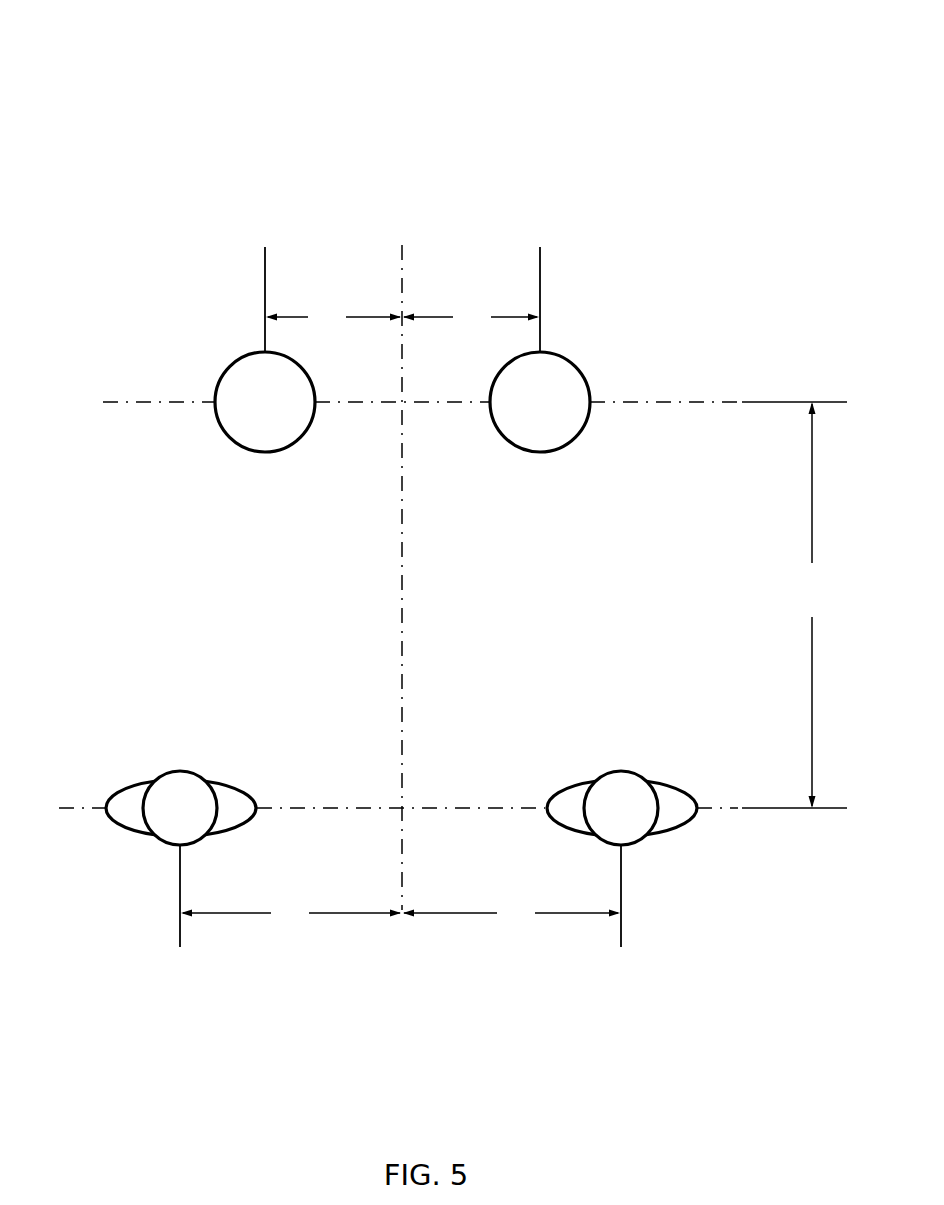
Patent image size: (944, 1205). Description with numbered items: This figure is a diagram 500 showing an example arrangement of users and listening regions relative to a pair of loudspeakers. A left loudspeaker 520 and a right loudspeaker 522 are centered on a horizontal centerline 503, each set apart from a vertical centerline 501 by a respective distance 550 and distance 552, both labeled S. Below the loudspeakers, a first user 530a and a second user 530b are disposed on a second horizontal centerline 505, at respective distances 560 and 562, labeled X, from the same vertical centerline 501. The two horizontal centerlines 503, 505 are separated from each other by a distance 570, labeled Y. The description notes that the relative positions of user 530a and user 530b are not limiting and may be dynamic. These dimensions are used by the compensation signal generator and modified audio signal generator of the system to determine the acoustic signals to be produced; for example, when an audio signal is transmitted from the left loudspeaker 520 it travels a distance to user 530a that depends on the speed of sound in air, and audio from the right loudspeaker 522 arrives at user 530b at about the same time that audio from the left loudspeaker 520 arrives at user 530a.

The diagram 500 is at (86, 41).
The centerline 501 is at (403, 602).
The centerline 503 is at (672, 401).
The centerline 505 is at (461, 807).
The left loudspeaker 520 is at (311, 378).
The right loudspeaker 522 is at (589, 383).
The user 530a is at (180, 771).
The user 530b is at (621, 771).
The distance 550 is at (333, 317).
The distance 552 is at (471, 317).
The distance 560 is at (291, 913).
The distance 562 is at (511, 913).
The distance 570 is at (812, 605).